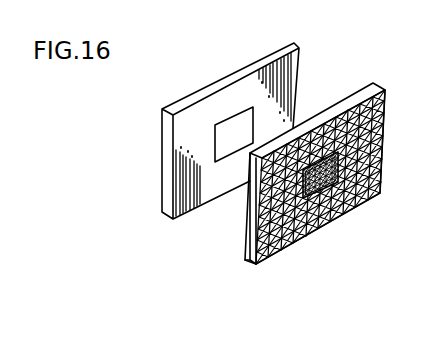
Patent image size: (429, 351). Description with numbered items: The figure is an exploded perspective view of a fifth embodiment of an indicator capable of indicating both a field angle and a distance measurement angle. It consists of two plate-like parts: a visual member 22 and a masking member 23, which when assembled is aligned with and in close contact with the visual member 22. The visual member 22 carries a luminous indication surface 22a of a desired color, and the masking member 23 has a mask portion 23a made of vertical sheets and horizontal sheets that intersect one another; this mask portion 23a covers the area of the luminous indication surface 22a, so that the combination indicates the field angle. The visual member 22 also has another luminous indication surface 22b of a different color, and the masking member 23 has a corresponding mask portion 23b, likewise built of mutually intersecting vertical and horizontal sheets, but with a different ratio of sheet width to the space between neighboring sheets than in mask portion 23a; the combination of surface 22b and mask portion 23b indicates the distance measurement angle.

The visual member 22 is at (162, 198).
The luminous indication surface 22a is at (198, 178).
The luminous indication surface 22b is at (240, 120).
The masking member 23 is at (245, 261).
The mask portion 23a is at (292, 246).
The mask portion 23b is at (313, 150).